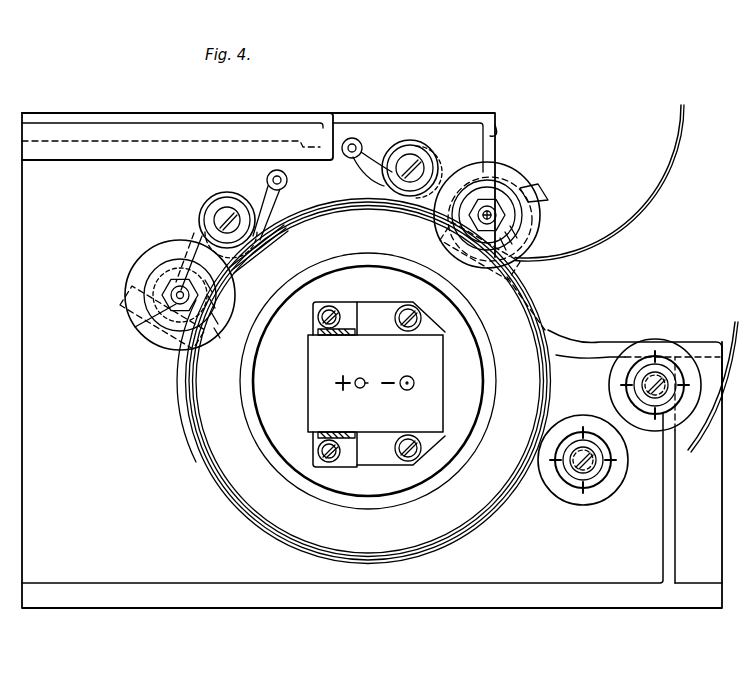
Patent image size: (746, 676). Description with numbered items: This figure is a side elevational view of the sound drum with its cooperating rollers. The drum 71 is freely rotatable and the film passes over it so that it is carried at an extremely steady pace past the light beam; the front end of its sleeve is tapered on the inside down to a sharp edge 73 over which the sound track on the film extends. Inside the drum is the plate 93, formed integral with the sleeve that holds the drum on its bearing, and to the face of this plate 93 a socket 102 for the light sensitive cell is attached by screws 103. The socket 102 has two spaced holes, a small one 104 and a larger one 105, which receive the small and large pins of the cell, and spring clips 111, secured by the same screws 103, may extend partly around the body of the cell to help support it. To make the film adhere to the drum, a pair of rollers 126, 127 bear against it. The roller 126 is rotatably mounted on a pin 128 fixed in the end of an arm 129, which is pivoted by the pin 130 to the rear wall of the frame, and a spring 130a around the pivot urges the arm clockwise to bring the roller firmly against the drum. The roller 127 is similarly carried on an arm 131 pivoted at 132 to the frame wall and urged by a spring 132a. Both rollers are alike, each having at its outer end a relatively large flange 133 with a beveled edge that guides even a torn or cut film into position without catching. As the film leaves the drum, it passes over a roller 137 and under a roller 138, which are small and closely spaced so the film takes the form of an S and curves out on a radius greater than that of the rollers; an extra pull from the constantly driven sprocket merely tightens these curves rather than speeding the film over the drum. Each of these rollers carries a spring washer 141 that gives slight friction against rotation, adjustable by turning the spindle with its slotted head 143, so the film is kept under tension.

The drum 71 is at (237, 482).
The sharp edge 73 is at (198, 432).
The plate 93 is at (463, 352).
The socket 102 is at (430, 403).
The screws 103 is at (323, 312).
The small hole 104 is at (360, 378).
The larger hole 105 is at (407, 376).
The spring clips 111 is at (315, 336).
The roller 126 is at (508, 178).
The roller 127 is at (143, 266).
The pin 128 is at (530, 208).
The arm 129 is at (445, 170).
The pin 130 is at (410, 156).
The spring 130a is at (380, 182).
The arm 131 is at (195, 232).
The pivot 132 is at (218, 215).
The spring 132a is at (264, 183).
The flange 133 is at (541, 229).
The roller 137 is at (570, 504).
The roller 138 is at (653, 340).
The spring washer 141 is at (673, 404).
The slotted head 143 is at (590, 473).